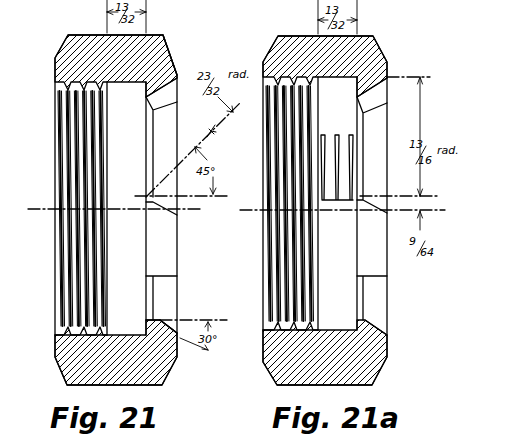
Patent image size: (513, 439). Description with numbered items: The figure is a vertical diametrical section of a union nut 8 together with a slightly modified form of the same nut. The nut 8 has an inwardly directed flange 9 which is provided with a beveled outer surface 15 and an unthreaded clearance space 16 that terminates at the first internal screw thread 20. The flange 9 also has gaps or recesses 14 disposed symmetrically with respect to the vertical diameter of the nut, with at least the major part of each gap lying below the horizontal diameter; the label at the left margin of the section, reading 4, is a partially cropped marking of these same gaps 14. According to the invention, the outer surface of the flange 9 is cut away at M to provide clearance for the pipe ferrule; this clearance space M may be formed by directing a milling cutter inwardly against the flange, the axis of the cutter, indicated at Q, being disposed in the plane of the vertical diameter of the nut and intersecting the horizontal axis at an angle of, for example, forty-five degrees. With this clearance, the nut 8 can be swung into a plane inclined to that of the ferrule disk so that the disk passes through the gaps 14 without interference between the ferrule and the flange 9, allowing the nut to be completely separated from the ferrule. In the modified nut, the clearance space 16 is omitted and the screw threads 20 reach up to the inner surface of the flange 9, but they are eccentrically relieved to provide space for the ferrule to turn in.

In FIG. 21, the gaps or recesses 14 is at (163, 252).
In FIG. 21, the internal thread 4 is at (53, 208).
In FIG. 21, the unthreaded clearance space 16 is at (165, 37).
In FIG. 21, the clearance space M is at (186, 60).
In FIG. 21, the axis of the cutter Q is at (228, 113).
In FIG. 21, the beveled outer surface 15 is at (162, 320).
In FIG. 21, the inwardly directed flange 9 is at (150, 328).
In FIG. 21A, the inwardly directed flange 9 is at (360, 330).
In FIG. 21, the first internal screw thread 20 is at (110, 338).
In FIG. 21A, the first internal screw thread 20 is at (337, 337).
In FIG. 21A, the union nut 8 is at (389, 44).